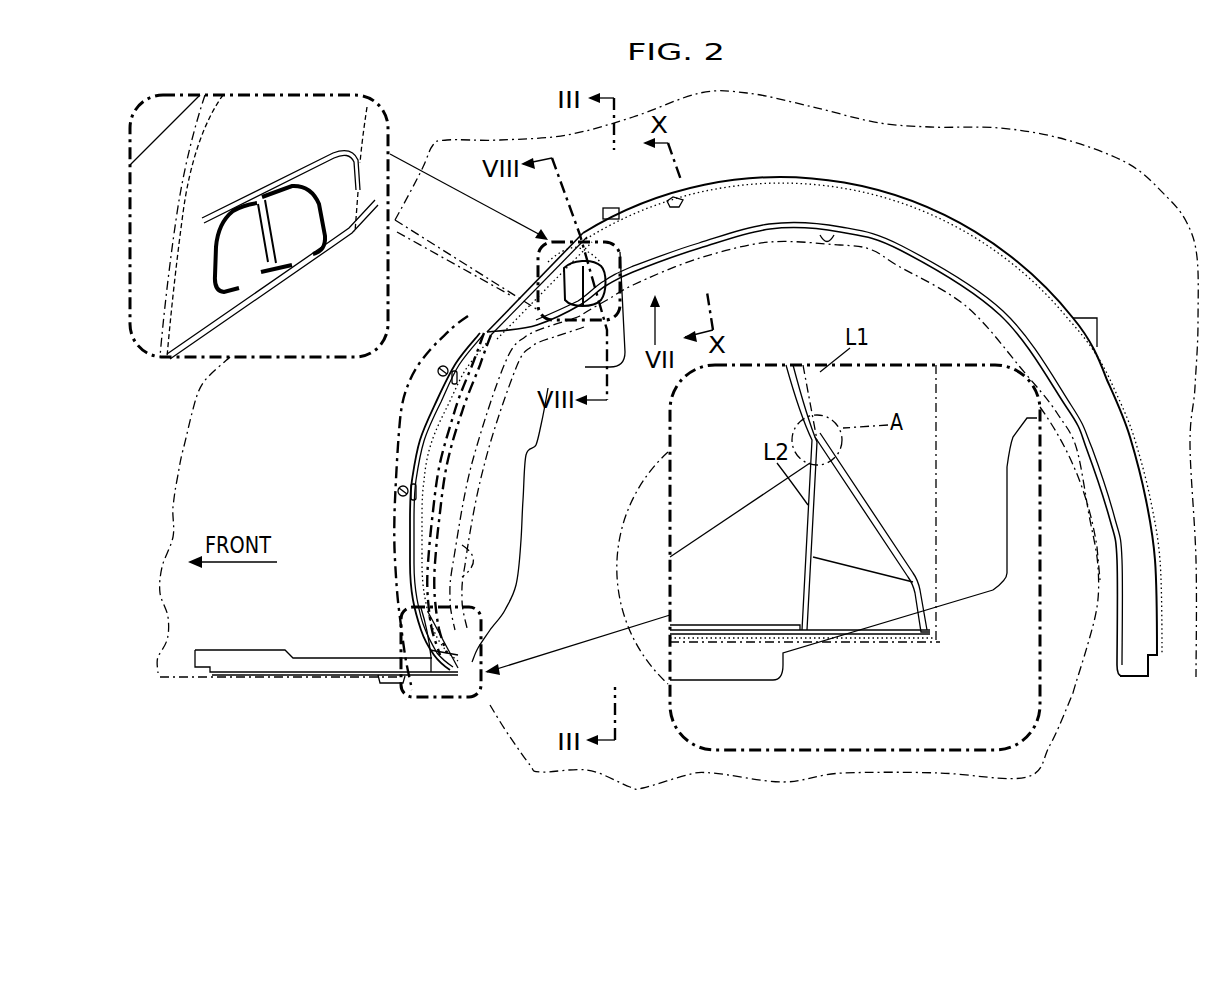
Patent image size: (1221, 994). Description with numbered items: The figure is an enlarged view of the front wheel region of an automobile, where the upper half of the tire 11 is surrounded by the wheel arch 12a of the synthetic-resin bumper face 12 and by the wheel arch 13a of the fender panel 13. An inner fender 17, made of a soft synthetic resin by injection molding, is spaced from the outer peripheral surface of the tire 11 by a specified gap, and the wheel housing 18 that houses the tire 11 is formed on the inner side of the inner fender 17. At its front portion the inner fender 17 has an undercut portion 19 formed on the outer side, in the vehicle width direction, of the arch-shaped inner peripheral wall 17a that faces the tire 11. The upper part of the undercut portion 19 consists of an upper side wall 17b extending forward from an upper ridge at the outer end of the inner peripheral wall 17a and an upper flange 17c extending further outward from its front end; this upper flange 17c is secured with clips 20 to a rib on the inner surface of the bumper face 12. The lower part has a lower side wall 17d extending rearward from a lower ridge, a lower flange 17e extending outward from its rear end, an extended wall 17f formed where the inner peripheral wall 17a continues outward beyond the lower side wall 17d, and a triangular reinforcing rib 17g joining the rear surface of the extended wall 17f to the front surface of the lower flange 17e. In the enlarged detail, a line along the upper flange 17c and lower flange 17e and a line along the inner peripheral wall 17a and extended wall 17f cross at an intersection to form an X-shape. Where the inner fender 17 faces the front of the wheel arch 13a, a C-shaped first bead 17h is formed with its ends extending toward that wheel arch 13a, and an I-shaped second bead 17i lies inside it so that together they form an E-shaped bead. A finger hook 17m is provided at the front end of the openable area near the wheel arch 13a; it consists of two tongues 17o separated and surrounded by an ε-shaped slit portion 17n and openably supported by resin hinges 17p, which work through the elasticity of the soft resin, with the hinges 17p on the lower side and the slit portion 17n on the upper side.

The tire 11 is at (510, 745).
The bumper face 12 is at (180, 682).
The wheel arch 12a is at (450, 580).
The fender panel 13 is at (872, 258).
The wheel arch 13a is at (825, 235).
The inner fender 17 is at (423, 416).
The inner peripheral wall 17a is at (485, 331).
The upper side wall 17b is at (423, 465).
The upper flange 17c is at (410, 538).
The lower side wall 17d is at (440, 670).
The lower flange 17e is at (453, 643).
The extended wall 17f is at (427, 663).
The reinforcing rib 17g is at (417, 643).
The first bead 17h is at (180, 233).
The second bead 17i is at (677, 210).
The finger hook 17m is at (285, 291).
The slit portion 17n is at (322, 205).
The tongues 17o is at (242, 226).
The resin hinges 17p is at (303, 257).
The wheel housing 18 is at (773, 263).
The undercut portion 19 is at (417, 368).
The clips 20 is at (443, 366).